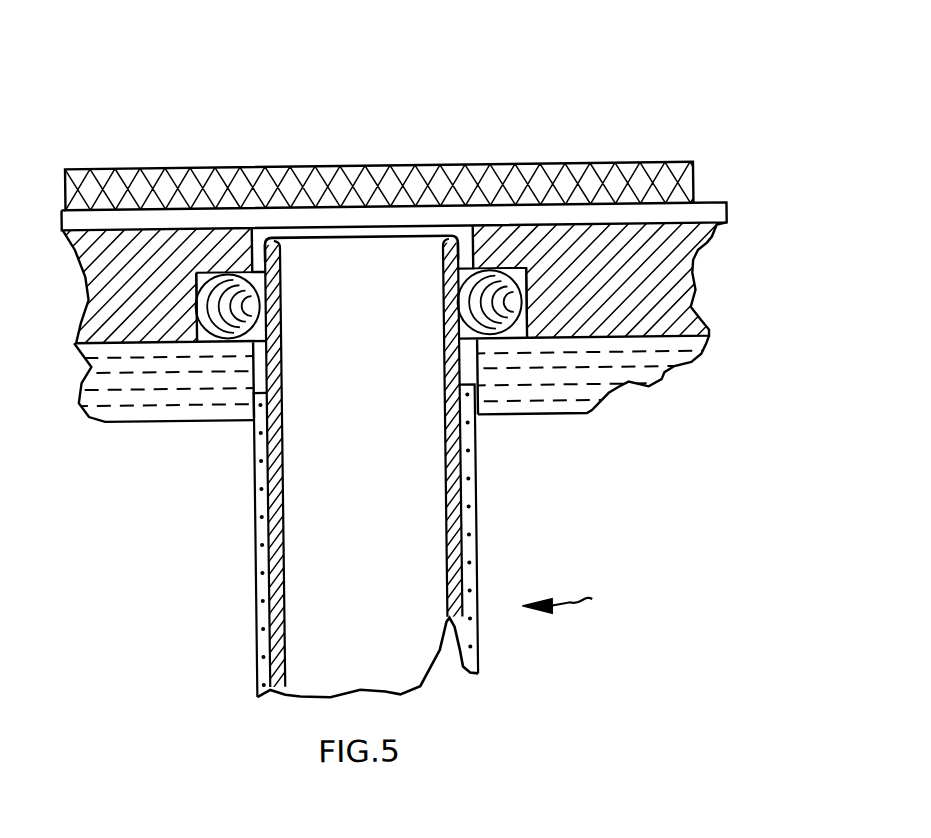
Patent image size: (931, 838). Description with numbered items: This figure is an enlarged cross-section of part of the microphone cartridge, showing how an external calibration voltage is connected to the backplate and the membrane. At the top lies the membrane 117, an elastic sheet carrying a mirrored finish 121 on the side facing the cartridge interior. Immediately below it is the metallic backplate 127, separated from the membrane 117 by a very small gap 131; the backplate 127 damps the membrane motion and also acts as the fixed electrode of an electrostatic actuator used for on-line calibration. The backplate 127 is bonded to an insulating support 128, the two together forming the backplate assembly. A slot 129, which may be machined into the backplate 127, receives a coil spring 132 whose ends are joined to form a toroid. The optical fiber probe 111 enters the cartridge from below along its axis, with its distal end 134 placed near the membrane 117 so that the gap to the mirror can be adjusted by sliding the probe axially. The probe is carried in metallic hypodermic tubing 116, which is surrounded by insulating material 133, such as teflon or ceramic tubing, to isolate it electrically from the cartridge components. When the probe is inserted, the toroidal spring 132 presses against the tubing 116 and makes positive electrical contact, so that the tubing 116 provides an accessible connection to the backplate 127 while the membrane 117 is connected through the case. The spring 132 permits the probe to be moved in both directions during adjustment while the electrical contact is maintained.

The optical fiber probe 111 is at (576, 601).
The metallic hypodermic tubing 116 is at (451, 555).
The membrane 117 is at (421, 187).
The mirrored finish 121 is at (236, 193).
The backplate 127 is at (628, 299).
The insulating support 128 is at (664, 373).
The slot 129 is at (523, 273).
The gap 131 is at (365, 219).
The coil spring 132 is at (500, 275).
The insulating material 133 is at (462, 500).
The distal end 134 is at (317, 243).